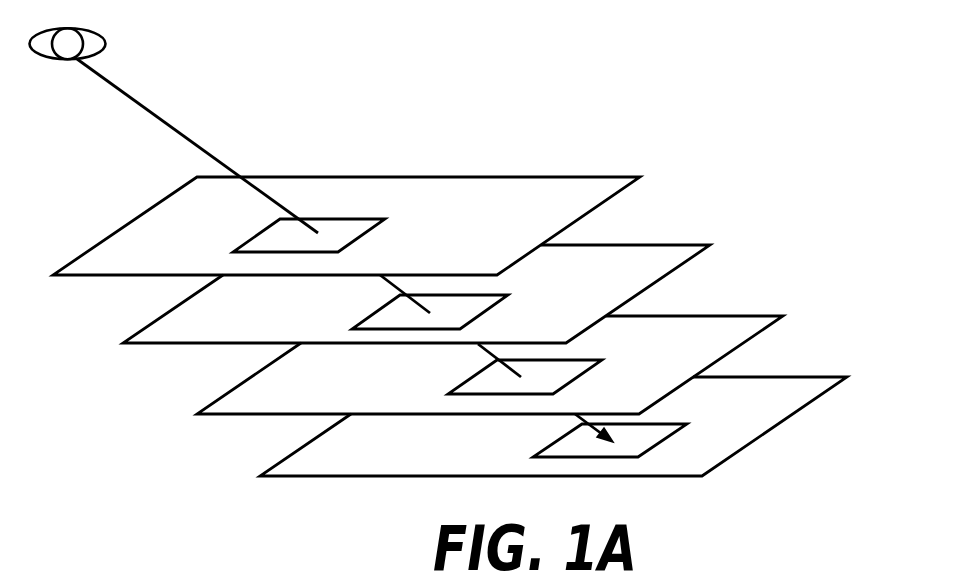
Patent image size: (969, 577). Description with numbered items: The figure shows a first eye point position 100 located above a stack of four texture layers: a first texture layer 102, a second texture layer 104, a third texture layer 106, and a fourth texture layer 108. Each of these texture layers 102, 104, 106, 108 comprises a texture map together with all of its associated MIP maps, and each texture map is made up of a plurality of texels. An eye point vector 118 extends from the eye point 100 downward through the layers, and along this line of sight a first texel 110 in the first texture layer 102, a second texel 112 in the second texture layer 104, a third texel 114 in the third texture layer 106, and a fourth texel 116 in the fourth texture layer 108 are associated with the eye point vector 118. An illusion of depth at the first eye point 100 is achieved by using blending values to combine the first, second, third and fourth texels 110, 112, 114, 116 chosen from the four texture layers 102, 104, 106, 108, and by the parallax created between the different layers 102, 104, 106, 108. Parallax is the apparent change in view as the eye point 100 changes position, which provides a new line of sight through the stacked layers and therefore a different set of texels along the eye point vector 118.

The first eye point position 100 is at (97, 35).
The first texture layer 102 is at (633, 178).
The second texture layer 104 is at (696, 251).
The third texture layer 106 is at (766, 323).
The fourth texture layer 108 is at (826, 386).
The first texel 110 is at (390, 221).
The second texel 112 is at (497, 297).
The third texel 114 is at (590, 367).
The fourth texel 116 is at (677, 427).
The eye point vector 118 is at (167, 118).